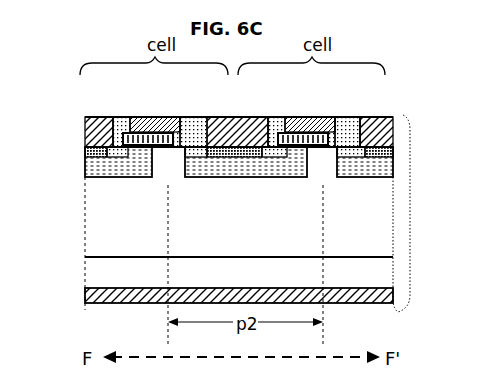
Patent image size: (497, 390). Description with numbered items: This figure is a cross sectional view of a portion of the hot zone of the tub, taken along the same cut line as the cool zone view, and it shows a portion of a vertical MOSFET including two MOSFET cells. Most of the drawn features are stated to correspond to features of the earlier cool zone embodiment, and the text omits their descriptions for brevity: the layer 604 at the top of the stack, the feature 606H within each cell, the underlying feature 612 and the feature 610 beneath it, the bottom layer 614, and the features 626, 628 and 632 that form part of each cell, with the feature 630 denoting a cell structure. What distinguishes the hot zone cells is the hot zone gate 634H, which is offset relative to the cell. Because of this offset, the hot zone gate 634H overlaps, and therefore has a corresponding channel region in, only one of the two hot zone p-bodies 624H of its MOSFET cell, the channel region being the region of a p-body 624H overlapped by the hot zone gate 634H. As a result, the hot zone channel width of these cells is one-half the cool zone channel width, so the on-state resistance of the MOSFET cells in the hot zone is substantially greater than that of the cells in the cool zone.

The feature corresponding to 404C 604 is at (86, 128).
The hot zone feature corresponding to 406 606H is at (157, 122).
The feature corresponding to 410 610 is at (256, 283).
The feature corresponding to 412 612 is at (256, 221).
The feature corresponding to 414 614 is at (85, 297).
The hot zone p-body 624H is at (185, 170).
The feature corresponding to 426C 626 is at (112, 157).
The feature corresponding to 428C 628 is at (84, 152).
The feature corresponding to 430 630 is at (355, 120).
The feature corresponding to 432 632 is at (176, 128).
The hot zone gate 634H is at (124, 128).